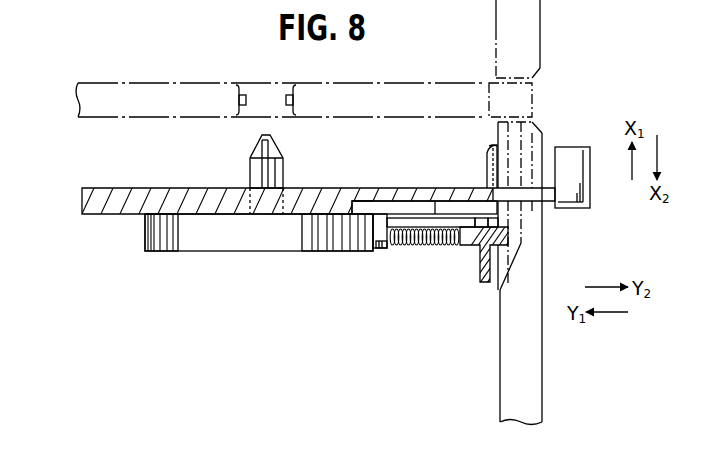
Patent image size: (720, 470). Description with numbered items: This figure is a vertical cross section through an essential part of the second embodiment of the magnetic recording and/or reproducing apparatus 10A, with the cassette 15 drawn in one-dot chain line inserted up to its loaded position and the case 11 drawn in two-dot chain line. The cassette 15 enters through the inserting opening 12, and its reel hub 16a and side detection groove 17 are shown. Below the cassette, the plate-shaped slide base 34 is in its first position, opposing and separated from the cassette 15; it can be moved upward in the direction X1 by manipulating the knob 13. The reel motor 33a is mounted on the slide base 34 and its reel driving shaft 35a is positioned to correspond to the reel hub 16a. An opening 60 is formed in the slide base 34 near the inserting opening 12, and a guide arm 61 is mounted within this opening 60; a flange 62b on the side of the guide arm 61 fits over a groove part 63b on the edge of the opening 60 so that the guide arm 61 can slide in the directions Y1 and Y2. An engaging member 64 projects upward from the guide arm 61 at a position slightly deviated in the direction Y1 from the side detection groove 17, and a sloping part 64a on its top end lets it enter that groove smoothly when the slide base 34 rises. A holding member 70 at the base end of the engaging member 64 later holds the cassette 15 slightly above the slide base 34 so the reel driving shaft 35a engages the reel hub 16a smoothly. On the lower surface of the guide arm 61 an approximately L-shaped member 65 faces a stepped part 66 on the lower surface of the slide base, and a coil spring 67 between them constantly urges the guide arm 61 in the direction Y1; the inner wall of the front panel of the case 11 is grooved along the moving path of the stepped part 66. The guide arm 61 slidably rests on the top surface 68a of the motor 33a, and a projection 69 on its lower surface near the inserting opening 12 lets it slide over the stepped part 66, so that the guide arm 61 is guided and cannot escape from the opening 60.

The apparatus 10A is at (157, 73).
The case 11 is at (537, 20).
The inserting opening 12 is at (533, 124).
The knob 13 is at (587, 157).
The cassette 15 is at (335, 84).
The reel hub 16a is at (252, 99).
The side detection groove 17 is at (533, 95).
The reel motor 33a is at (190, 251).
The slide base 34 is at (312, 189).
The reel driving shaft 35a is at (253, 175).
The opening 60 is at (360, 200).
The guide arm 61 is at (371, 209).
The flange 62b is at (333, 207).
The groove part 63b is at (398, 201).
The engaging member 64 is at (487, 163).
The sloping part 64a is at (493, 147).
The L-shaped member 65 is at (376, 249).
The stepped part 66 is at (509, 233).
The coil spring 67 is at (423, 246).
The top surface 68a is at (322, 206).
The projection 69 is at (462, 216).
The holding member 70 is at (479, 220).